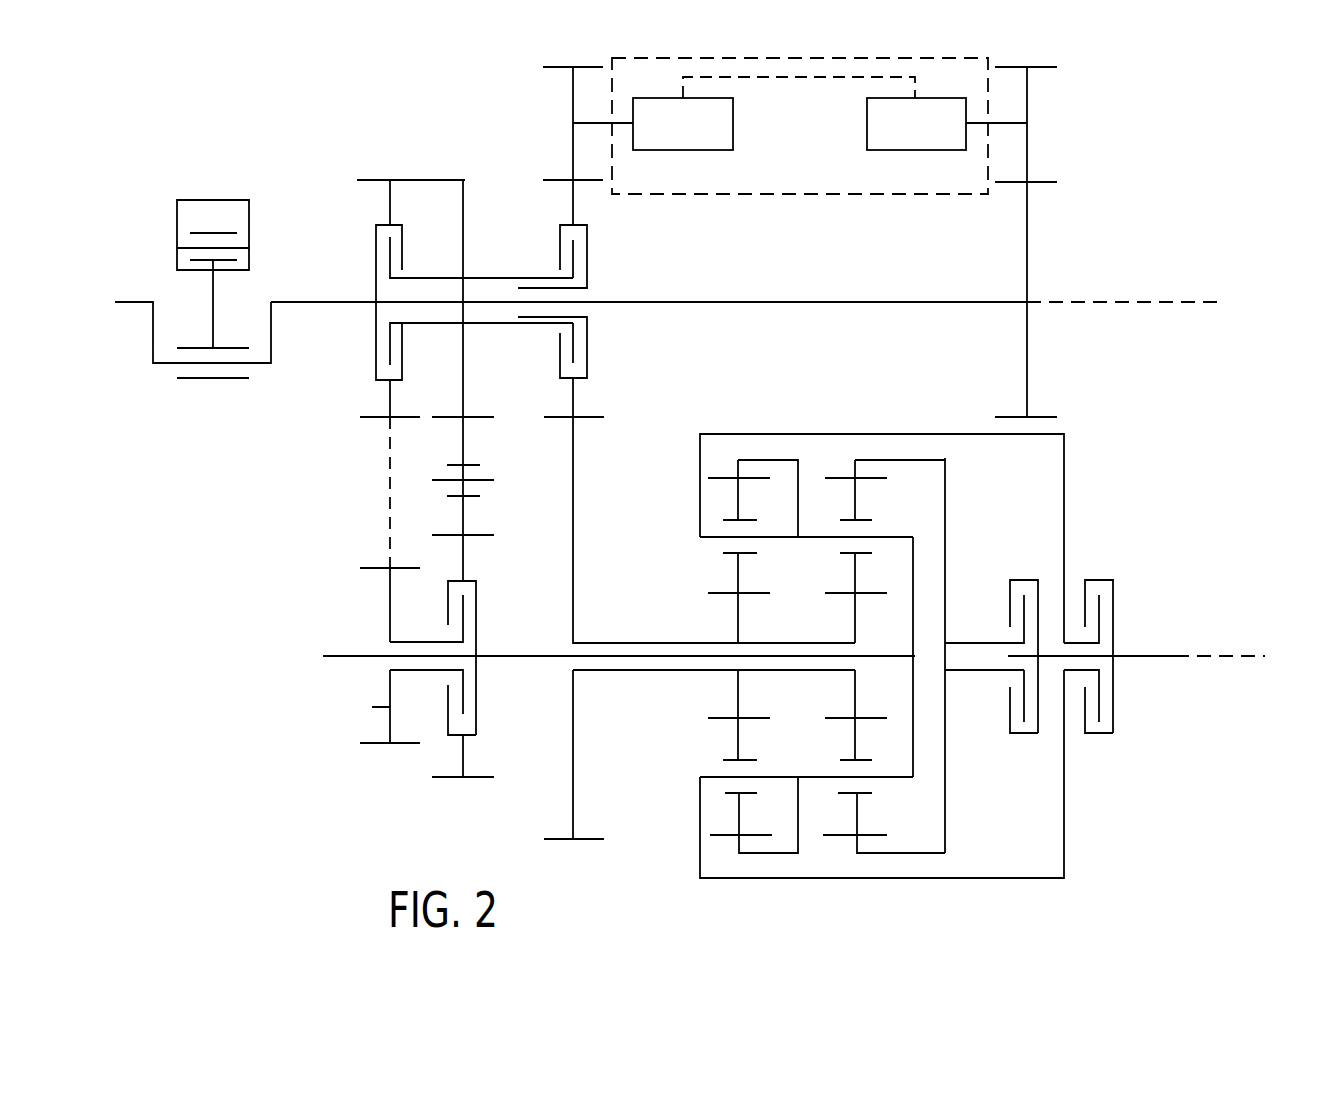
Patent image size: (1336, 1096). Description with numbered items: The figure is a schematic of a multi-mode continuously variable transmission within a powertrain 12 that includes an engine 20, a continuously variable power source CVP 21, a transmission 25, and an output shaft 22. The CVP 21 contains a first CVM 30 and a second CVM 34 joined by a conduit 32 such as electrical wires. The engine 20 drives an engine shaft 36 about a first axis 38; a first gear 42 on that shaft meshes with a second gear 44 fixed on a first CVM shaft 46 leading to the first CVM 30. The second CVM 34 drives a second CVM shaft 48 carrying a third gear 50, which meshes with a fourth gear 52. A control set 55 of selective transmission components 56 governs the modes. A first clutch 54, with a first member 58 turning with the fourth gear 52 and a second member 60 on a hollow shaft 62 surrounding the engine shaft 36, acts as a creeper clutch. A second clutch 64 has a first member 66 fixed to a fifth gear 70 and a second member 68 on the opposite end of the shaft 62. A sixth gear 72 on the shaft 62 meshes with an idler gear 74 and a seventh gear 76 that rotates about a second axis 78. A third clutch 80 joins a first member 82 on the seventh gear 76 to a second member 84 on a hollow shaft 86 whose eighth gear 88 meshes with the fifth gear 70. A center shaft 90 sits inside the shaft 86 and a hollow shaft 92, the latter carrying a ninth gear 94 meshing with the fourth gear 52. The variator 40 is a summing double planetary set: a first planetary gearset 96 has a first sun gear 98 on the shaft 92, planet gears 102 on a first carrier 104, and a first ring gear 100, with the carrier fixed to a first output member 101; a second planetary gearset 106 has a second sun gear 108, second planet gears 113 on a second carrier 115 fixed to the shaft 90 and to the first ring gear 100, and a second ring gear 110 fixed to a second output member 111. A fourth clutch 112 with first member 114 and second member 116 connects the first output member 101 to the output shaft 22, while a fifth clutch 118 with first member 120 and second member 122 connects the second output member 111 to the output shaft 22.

The powertrain 12 is at (313, 97).
The engine 20 is at (143, 212).
The continuously variable power source 21 is at (800, 195).
The output shaft 22 is at (1175, 656).
The transmission 25 is at (305, 692).
The first CVM 30 is at (903, 152).
The conduit 32 is at (812, 75).
The second CVM 34 is at (710, 152).
The engine shaft 36 is at (322, 300).
The first axis 38 is at (1157, 303).
The variator 40 is at (715, 900).
The first gear 42 is at (1027, 228).
The second gear 44 is at (1027, 98).
The first CVM shaft 46 is at (1003, 123).
The second CVM shaft 48 is at (620, 120).
The third gear 50 is at (572, 102).
The fourth gear 52 is at (572, 207).
The first clutch 54 is at (605, 228).
The control set 55 is at (313, 193).
The selective transmission components 56 is at (310, 388).
The first member 58 is at (562, 250).
The second member 60 is at (587, 253).
The shaft 62 is at (538, 327).
The second clutch 64 is at (365, 287).
The first member 66 is at (375, 317).
The second member 68 is at (388, 353).
The fifth gear 70 is at (387, 203).
The sixth gear 72 is at (462, 230).
The idler gear 74 is at (465, 438).
The seventh gear 76 is at (465, 753).
The second axis 78 is at (1247, 656).
The third clutch 80 is at (502, 551).
The first member 82 is at (476, 627).
The second member 84 is at (465, 685).
The hollow shaft 86 is at (427, 640).
The eighth gear 88 is at (372, 707).
The shaft 90 is at (353, 657).
The hollow shaft 92 is at (651, 680).
The ninth gear 94 is at (575, 474).
The first planetary gearset 96 is at (688, 727).
The first sun gear 98 is at (740, 690).
The first ring gear 100 is at (740, 843).
The first output member 101 is at (980, 880).
The planet gears 102 is at (742, 728).
The first carrier 104 is at (700, 800).
The second planetary gearset 106 is at (912, 487).
The second sun gear 108 is at (855, 627).
The second ring gear 110 is at (853, 467).
The second output member 111 is at (997, 670).
The fourth clutch 112 is at (1127, 572).
The second planet gears 113 is at (855, 490).
The first member 114 is at (1115, 643).
The second carrier 115 is at (915, 560).
The second member 116 is at (1098, 703).
The fifth clutch 118 is at (1021, 565).
The first member 120 is at (1025, 735).
The second member 122 is at (1023, 708).